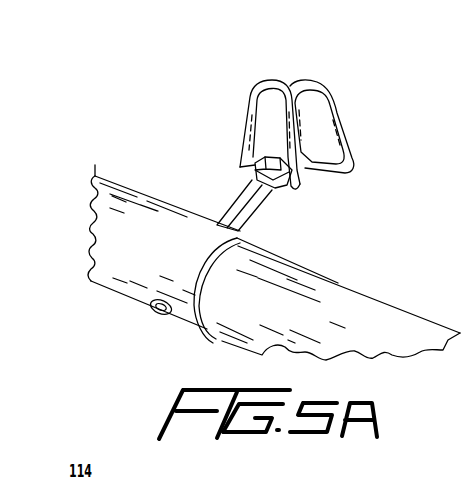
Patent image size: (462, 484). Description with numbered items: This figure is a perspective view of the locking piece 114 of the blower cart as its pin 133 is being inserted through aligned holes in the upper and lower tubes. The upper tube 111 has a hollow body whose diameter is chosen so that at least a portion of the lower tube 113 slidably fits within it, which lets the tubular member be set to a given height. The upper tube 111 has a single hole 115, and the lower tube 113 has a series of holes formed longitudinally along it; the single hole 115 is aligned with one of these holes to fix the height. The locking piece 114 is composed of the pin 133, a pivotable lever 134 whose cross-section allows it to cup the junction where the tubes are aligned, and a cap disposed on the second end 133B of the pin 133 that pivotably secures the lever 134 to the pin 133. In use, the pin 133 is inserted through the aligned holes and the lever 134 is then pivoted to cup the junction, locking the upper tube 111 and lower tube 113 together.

The upper tube 111 is at (113, 291).
The lower tube 113 is at (362, 336).
The locking piece 114 is at (261, 115).
The single hole 115 is at (163, 313).
The pin 133 is at (257, 223).
The second end of the pin 133B is at (297, 184).
The pivotable lever 134 is at (243, 83).